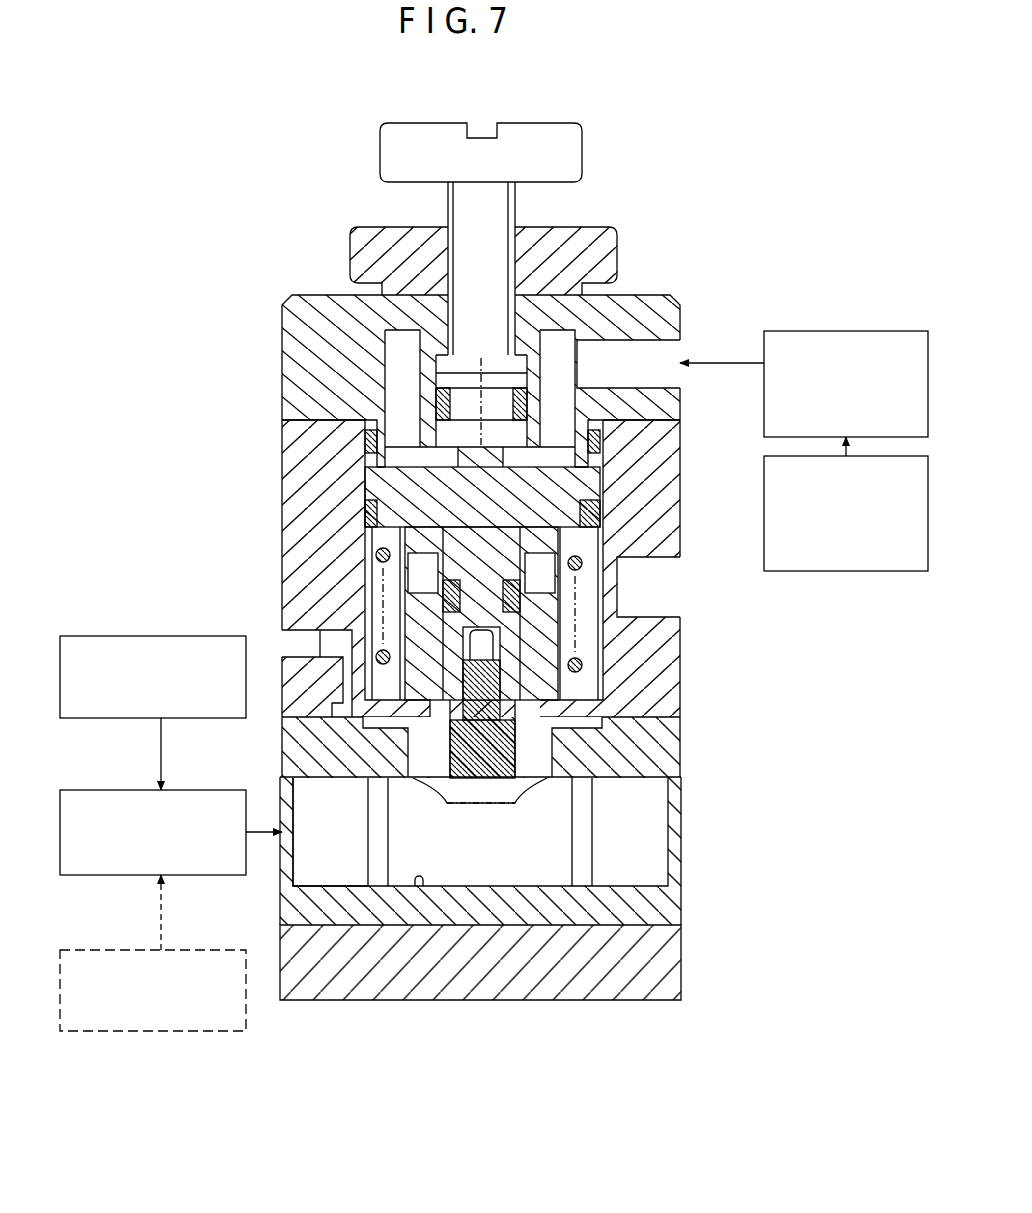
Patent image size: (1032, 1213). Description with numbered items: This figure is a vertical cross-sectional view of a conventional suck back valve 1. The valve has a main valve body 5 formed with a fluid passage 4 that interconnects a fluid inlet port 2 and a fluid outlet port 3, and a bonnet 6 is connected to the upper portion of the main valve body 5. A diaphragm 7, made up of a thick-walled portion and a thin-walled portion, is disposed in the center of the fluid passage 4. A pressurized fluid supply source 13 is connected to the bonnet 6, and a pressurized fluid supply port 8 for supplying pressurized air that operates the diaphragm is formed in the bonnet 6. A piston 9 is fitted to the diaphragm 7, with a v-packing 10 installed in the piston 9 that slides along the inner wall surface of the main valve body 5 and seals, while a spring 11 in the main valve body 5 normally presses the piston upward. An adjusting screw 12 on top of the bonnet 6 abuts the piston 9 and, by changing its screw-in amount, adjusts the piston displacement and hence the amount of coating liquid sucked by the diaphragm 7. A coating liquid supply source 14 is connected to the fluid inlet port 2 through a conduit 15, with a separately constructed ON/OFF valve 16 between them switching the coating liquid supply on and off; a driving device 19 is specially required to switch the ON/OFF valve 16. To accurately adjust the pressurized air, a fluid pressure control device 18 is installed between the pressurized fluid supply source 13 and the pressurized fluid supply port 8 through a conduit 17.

The suck back valve 1 is at (695, 200).
The fluid inlet port 2 is at (314, 890).
The fluid outlet port 3 is at (640, 843).
The fluid passage 4 is at (423, 886).
The main valve body 5 is at (683, 697).
The bonnet 6 is at (683, 302).
The diaphragm 7 is at (497, 778).
The pressurized fluid supply port 8 is at (686, 380).
The piston 9 is at (497, 553).
The v-packing 10 is at (365, 517).
The spring 11 is at (600, 660).
The adjusting screw 12 is at (495, 207).
The pressurized fluid supply source 13 is at (886, 571).
The coating liquid supply source 14 is at (206, 636).
The conduit 15 is at (161, 748).
The ON/OFF valve 16 is at (100, 790).
The conduit 17 is at (745, 362).
The fluid pressure control device 18 is at (890, 331).
The driving device 19 is at (114, 950).